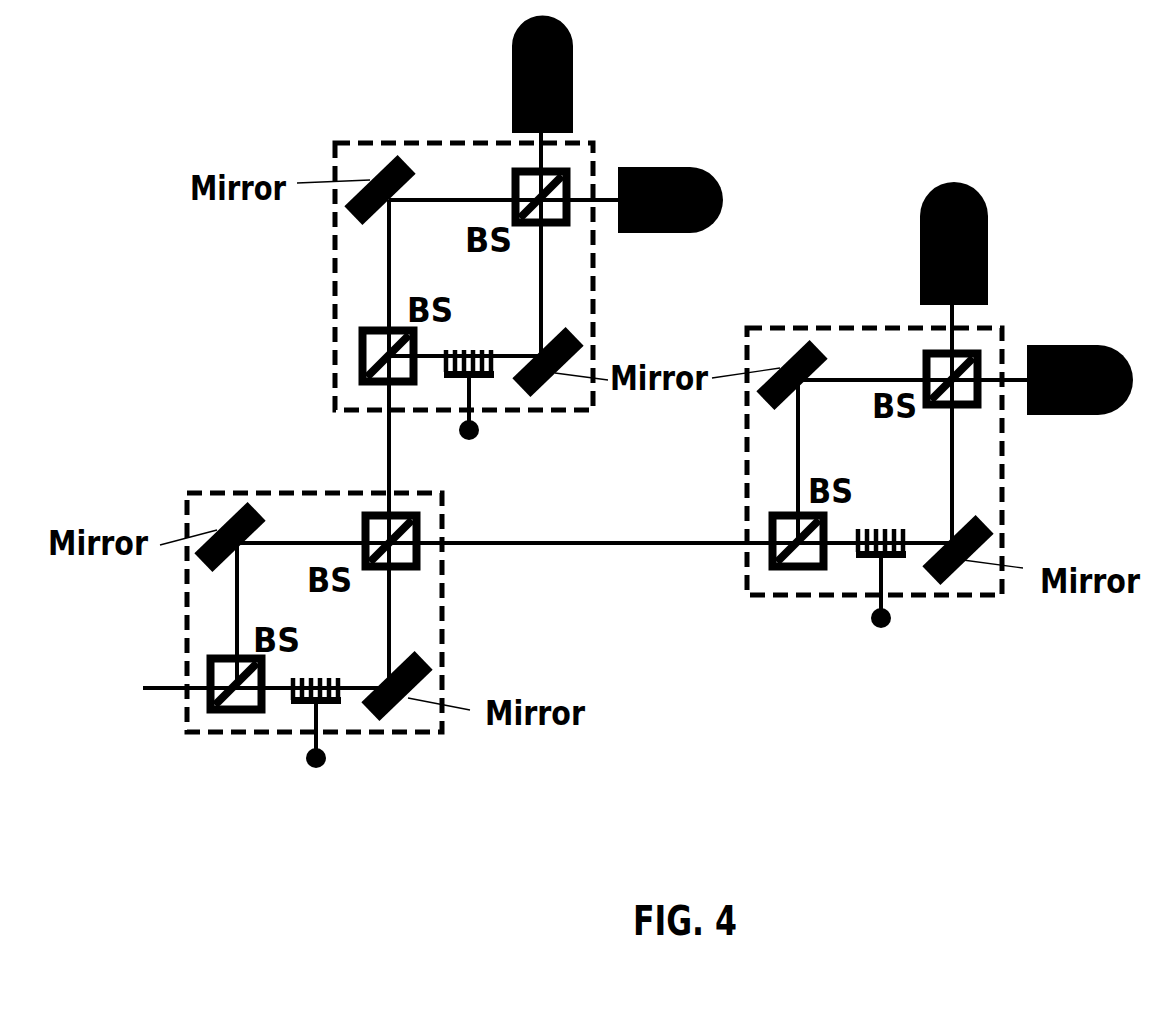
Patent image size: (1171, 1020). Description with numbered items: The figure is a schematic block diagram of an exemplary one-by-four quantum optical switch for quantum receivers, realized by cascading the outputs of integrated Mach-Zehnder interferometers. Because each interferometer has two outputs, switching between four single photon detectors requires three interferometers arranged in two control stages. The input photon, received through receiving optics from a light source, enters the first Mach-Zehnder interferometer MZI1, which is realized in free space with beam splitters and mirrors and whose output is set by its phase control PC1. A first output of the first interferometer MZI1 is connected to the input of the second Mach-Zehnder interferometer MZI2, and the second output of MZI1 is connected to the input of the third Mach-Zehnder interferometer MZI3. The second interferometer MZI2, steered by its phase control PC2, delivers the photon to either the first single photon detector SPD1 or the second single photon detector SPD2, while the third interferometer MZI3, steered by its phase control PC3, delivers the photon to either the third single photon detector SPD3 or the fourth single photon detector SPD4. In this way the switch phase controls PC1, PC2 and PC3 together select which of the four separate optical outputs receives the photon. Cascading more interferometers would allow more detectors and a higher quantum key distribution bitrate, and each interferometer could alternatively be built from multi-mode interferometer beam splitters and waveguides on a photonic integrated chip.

The first Mach-Zehnder interferometer MZI1 is at (314, 585).
The second Mach-Zehnder interferometer MZI2 is at (464, 251).
The third Mach-Zehnder interferometer MZI3 is at (874, 435).
The first single photon detector SPD1 is at (596, 74).
The second single photon detector SPD2 is at (676, 182).
The third single photon detector SPD3 is at (1011, 242).
The fourth single photon detector SPD4 is at (1090, 362).
The first phase control PC1 is at (375, 765).
The second phase control PC2 is at (528, 437).
The third phase control PC3 is at (940, 622).